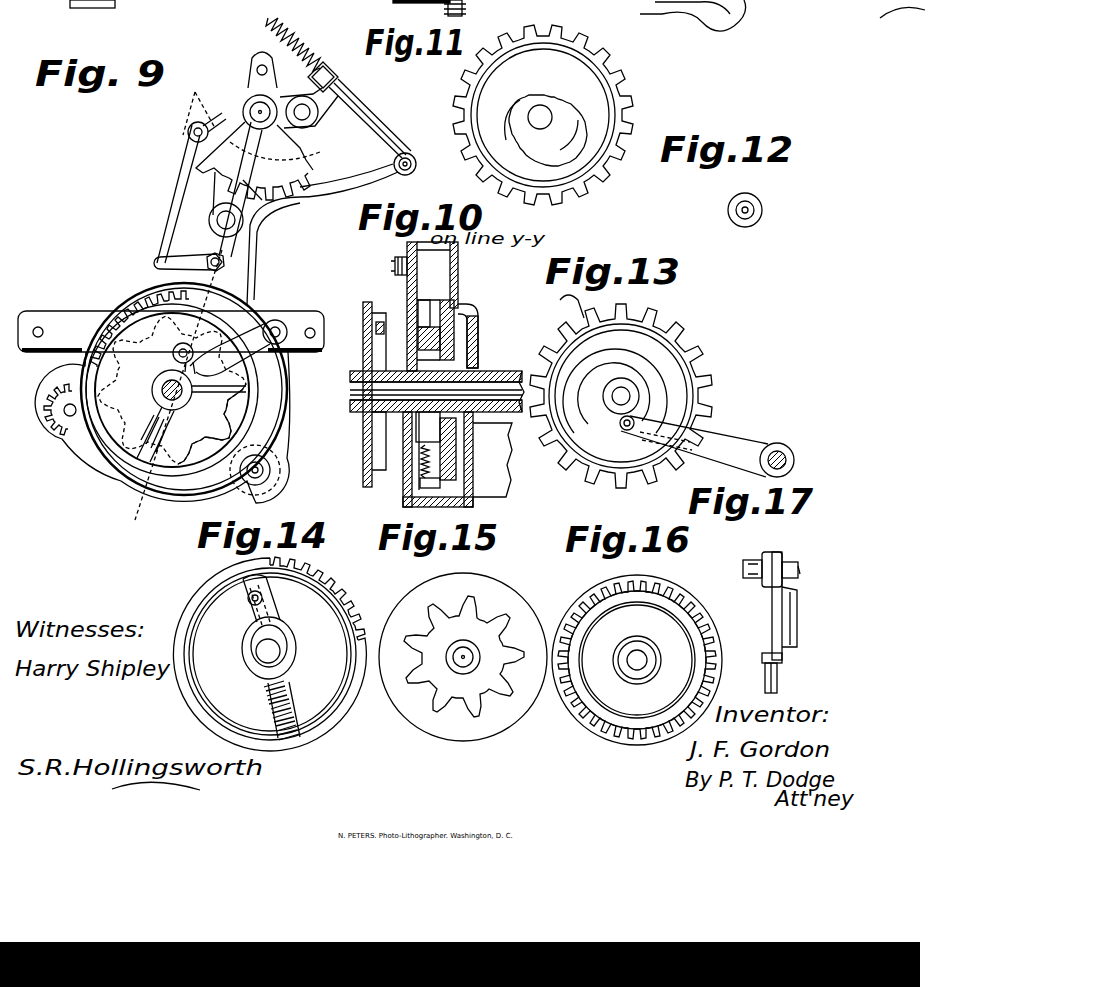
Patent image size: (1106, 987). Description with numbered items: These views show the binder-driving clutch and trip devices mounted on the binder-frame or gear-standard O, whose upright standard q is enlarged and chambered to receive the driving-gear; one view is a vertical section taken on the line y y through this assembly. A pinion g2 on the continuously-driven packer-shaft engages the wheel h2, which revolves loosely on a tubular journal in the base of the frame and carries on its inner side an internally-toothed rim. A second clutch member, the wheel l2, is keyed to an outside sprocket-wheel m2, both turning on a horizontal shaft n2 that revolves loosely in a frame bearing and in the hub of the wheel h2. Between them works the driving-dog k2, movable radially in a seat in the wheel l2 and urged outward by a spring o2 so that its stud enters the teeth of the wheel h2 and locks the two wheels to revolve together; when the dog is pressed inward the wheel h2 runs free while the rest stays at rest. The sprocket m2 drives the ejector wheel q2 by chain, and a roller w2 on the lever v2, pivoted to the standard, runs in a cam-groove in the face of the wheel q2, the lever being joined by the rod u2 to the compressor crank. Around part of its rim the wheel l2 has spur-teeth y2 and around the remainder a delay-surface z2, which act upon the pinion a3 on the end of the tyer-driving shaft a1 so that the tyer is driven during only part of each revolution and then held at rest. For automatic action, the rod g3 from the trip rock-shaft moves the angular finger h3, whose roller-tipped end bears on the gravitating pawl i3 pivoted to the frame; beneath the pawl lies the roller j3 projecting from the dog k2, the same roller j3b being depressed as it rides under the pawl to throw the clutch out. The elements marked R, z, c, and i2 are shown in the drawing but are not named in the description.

In FIG. 9, the ejector-driving wheel q2 is at (264, 166).
In FIG. 9, the link R is at (303, 118).
In FIG. 9, the nut z is at (323, 79).
In FIG. 9, the rod u2 is at (370, 118).
In FIG. 9, the lever v2 is at (331, 229).
In FIG. 9, the roller j3 is at (203, 104).
In FIG. 9, the roller w2 is at (190, 134).
In FIG. 9, the rod g3 is at (175, 190).
In FIG. 9, the standard q is at (212, 246).
In FIG. 9, the binder-frame or gear-standard O is at (218, 246).
In FIG. 9, the section line y y is at (194, 399).
In FIG. 9, the angular lever or finger h3 is at (158, 262).
In FIG. 9, the spur-teeth y2 is at (112, 320).
In FIG. 10, the spur-teeth y2 is at (458, 292).
In FIG. 14, the spur-teeth y2 is at (269, 654).
In FIG. 9, the horizontal shaft n2 is at (160, 388).
In FIG. 10, the horizontal shaft n2 is at (437, 391).
In FIG. 9, the sprocket-wheel m2 is at (172, 390).
In FIG. 10, the sprocket-wheel m2 is at (355, 441).
In FIG. 13, the sprocket-wheel m2 is at (750, 380).
In FIG. 9, the gravitating pawl or dog i3 is at (276, 320).
In FIG. 9, the roller j3b is at (172, 354).
In FIG. 9, the pinion g2 is at (60, 409).
In FIG. 11, the pinion g2 is at (543, 28).
In FIG. 9, the tyer-driving shaft a1 is at (263, 462).
In FIG. 9, the pinion a3 is at (282, 478).
In FIG. 12, the pinion a3 is at (733, 202).
In FIG. 9, the delay-surface z2 is at (128, 482).
In FIG. 10, the delay-surface z2 is at (431, 489).
In FIG. 14, the delay-surface z2 is at (276, 765).
In FIG. 9, the direction c is at (195, 514).
In FIG. 10, the wheel l2 is at (424, 305).
In FIG. 14, the wheel l2 is at (270, 654).
In FIG. 10, the wheel h2 is at (480, 308).
In FIG. 15, the wheel h2 is at (463, 657).
In FIG. 16, the wheel h2 is at (637, 660).
In FIG. 10, the driving-dog k2 is at (418, 345).
In FIG. 14, the driving-dog k2 is at (296, 640).
In FIG. 17, the driving-dog k2 is at (798, 605).
In FIG. 10, the spring o2 is at (418, 460).
In FIG. 14, the spring o2 is at (298, 708).
In FIG. 15, the cam lobes i2 is at (464, 656).